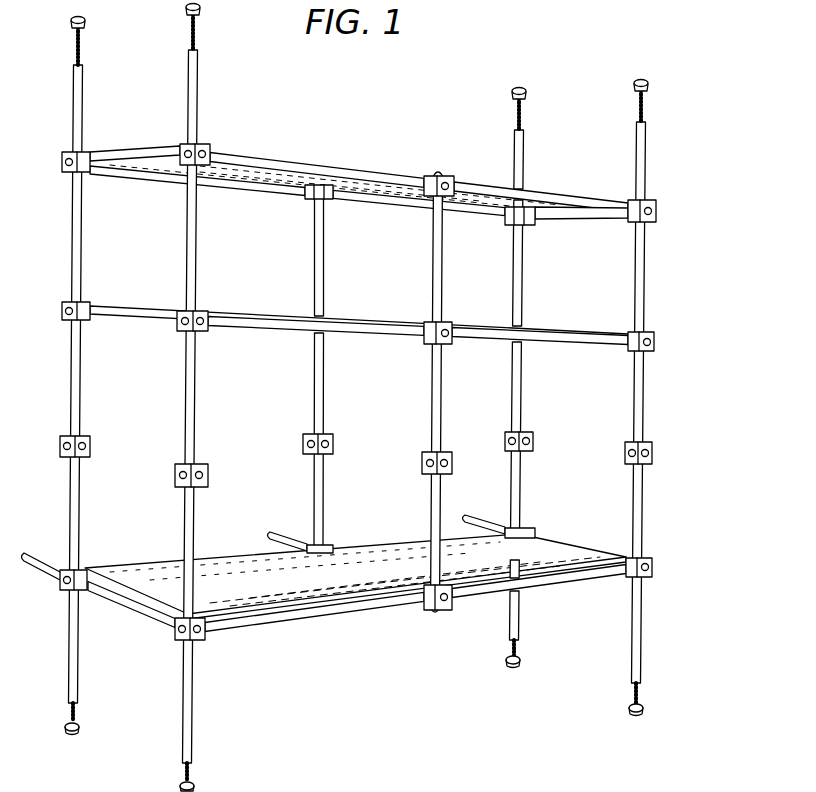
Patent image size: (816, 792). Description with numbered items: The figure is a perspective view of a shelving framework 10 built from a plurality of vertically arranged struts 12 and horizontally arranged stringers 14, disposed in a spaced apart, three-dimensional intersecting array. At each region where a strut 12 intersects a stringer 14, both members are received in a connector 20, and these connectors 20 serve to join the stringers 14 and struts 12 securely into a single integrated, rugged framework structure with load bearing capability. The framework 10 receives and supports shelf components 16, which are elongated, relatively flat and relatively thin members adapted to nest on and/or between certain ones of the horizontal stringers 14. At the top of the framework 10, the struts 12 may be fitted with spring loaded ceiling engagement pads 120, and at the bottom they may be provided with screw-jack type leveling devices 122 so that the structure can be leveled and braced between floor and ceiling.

The framework 10 is at (338, 158).
The strut 12 is at (69, 423).
The stringer 14 is at (375, 193).
The shelf component 16 is at (131, 150).
The connector 20 is at (65, 303).
The spring loaded ceiling engagement pad 120 is at (647, 108).
The screw-jack type leveling device 122 is at (647, 692).